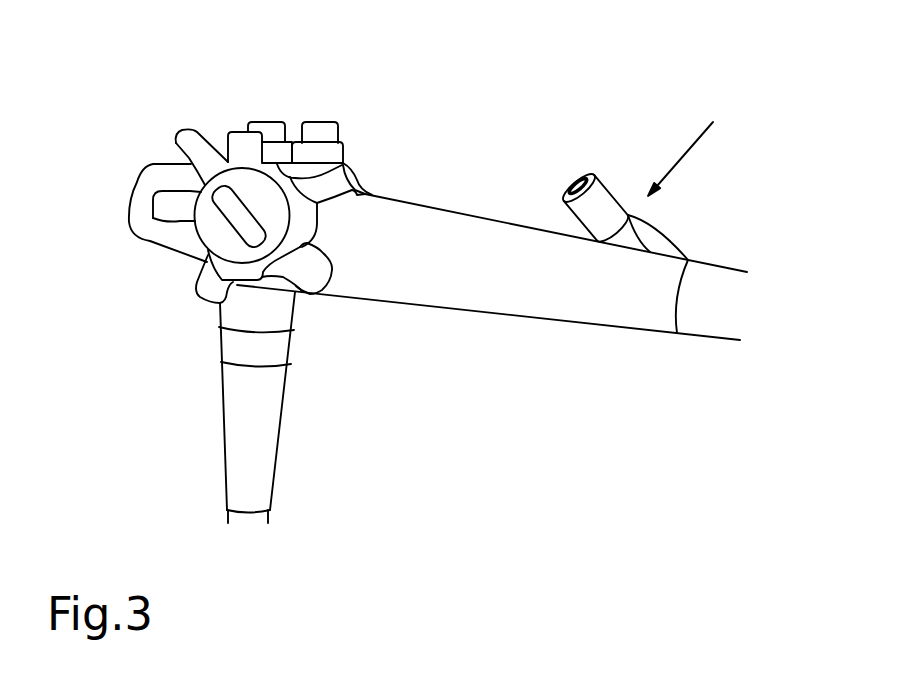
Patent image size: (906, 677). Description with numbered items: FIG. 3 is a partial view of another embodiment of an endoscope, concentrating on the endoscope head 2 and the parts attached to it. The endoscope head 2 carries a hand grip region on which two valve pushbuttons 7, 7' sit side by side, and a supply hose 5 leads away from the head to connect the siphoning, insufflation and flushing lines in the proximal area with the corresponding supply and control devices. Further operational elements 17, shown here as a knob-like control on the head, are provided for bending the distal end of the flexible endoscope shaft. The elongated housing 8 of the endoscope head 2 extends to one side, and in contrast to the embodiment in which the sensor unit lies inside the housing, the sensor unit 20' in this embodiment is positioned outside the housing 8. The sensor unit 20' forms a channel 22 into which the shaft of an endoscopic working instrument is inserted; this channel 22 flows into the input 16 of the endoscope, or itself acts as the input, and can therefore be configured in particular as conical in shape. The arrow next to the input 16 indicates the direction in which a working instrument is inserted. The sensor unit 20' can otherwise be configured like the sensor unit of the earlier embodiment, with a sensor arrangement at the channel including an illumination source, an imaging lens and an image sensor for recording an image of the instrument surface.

The endoscope head 2 is at (477, 113).
The supply hose 5 is at (222, 430).
The valve pushbutton 7 is at (270, 107).
The valve pushbutton 7' is at (317, 107).
The housing 8 is at (503, 315).
The input 16 is at (687, 141).
The operational elements 17 is at (213, 238).
The sensor unit 20' is at (623, 181).
The channel 22 is at (576, 183).